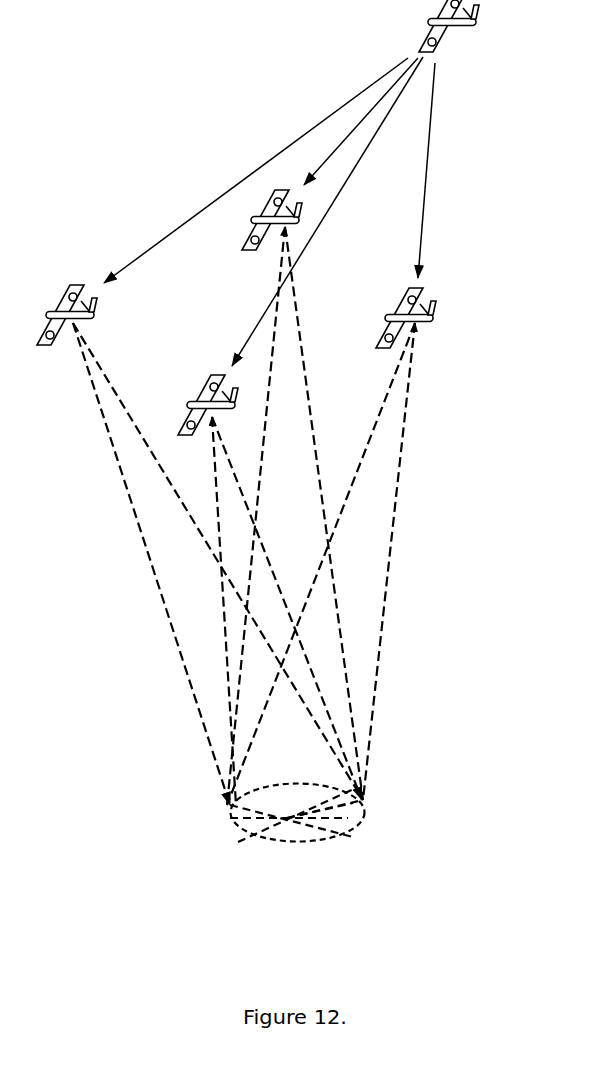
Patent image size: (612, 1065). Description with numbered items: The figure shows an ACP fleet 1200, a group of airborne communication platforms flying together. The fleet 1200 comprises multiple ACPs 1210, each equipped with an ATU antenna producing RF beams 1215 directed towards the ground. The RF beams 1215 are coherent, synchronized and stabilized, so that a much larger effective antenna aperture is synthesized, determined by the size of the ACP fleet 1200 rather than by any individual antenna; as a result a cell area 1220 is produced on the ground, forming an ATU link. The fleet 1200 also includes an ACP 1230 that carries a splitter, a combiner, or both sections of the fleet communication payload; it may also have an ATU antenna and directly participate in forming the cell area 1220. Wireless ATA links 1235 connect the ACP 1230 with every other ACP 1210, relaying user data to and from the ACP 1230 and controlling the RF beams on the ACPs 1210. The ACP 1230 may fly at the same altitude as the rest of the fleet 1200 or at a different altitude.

The ACP fleet 1200 is at (271, 926).
The ACPs 1210 is at (72, 285).
The RF beams 1215 is at (247, 590).
The cell area 1220 is at (297, 799).
The ACP 1230 is at (465, 31).
The links 1235 is at (342, 195).